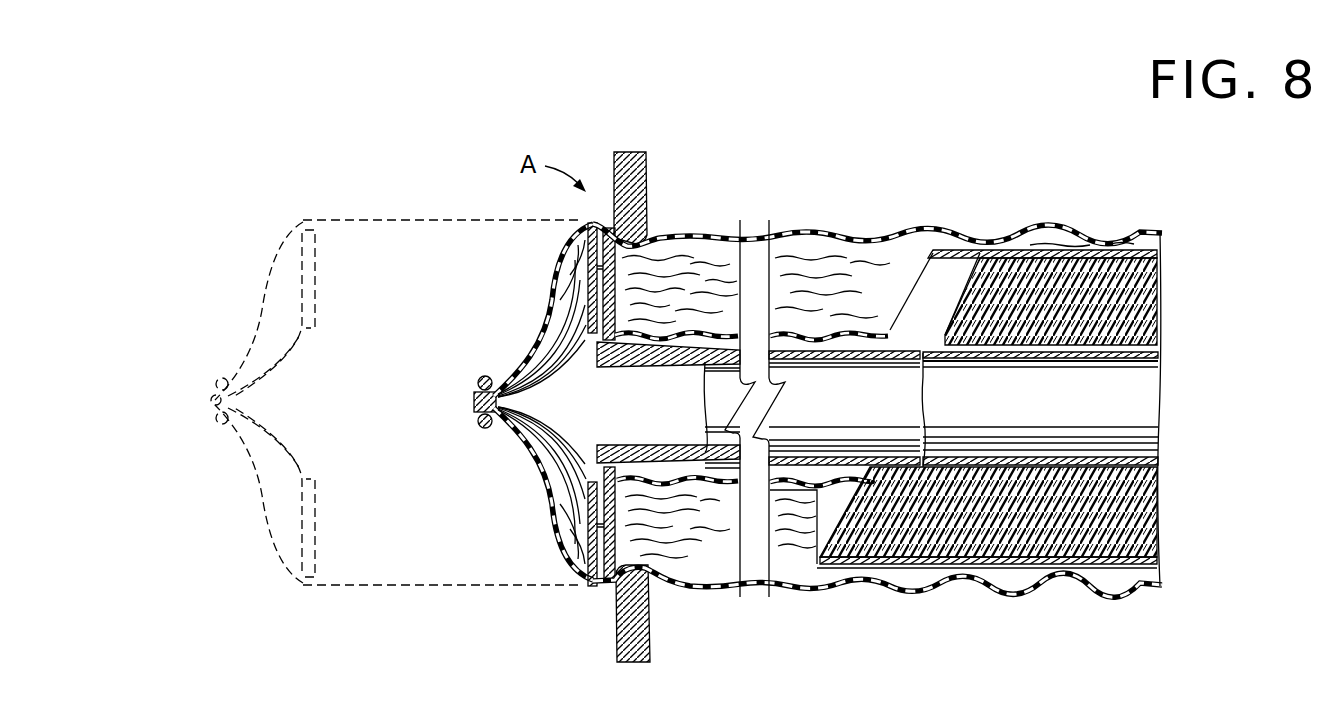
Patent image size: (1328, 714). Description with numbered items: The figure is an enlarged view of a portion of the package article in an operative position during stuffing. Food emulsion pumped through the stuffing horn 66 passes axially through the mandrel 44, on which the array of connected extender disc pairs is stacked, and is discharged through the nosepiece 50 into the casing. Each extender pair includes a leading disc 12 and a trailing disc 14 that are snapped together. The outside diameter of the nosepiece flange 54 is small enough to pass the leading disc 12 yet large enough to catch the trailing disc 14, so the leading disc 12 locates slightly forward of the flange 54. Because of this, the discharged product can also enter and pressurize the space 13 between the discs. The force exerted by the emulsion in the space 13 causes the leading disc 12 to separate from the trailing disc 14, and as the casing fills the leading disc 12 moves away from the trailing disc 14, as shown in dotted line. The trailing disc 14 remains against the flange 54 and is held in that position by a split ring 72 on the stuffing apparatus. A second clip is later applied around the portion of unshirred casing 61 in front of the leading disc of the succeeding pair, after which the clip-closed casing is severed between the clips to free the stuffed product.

The leading disc 12 is at (590, 310).
The space 13 is at (589, 522).
The trailing disc 14 is at (612, 304).
The mandrel 44 is at (927, 396).
The nosepiece 50 is at (636, 462).
The nosepiece flange 54 is at (590, 345).
The unshirred casing 61 is at (693, 232).
The stuffing horn 66 is at (681, 367).
The split ring 72 is at (647, 162).